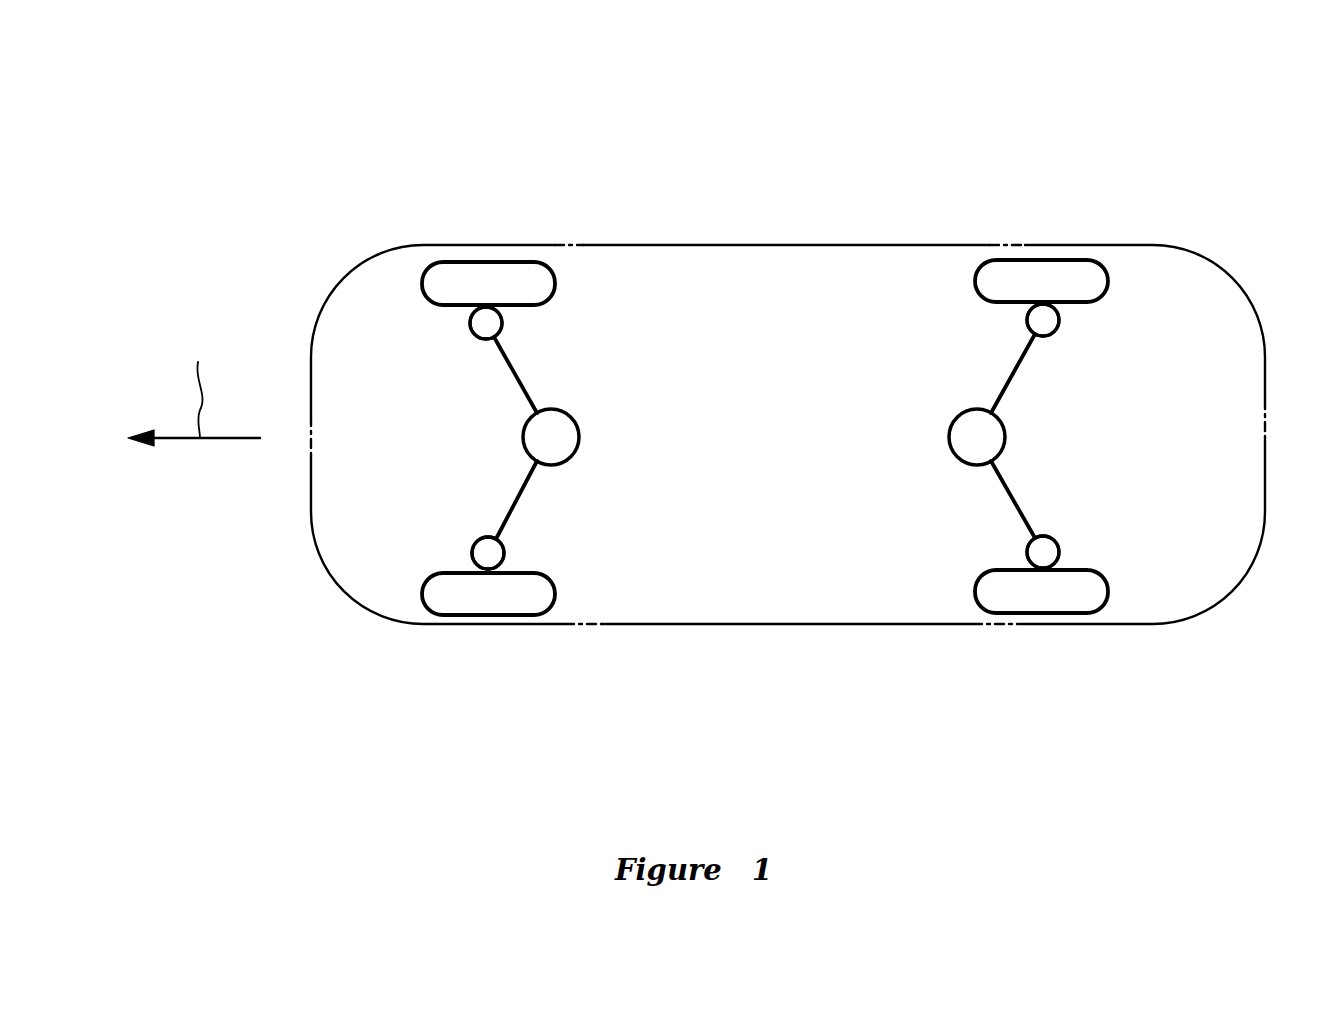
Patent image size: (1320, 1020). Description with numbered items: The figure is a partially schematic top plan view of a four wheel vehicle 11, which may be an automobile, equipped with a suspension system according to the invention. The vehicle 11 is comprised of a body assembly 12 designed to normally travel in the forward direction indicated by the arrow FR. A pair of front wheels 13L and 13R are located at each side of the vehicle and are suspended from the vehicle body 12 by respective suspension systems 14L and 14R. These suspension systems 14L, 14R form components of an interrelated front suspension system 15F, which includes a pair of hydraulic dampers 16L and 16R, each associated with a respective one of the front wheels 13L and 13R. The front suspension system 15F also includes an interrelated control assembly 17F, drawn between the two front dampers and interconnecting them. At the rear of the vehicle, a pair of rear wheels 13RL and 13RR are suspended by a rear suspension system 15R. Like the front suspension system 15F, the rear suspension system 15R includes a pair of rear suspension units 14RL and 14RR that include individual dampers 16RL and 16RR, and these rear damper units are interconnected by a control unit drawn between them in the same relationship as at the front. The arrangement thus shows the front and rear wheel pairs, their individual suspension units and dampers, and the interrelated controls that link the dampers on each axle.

The vehicle 11 is at (1224, 111).
The body assembly 12 is at (785, 246).
The front wheel 13R is at (507, 284).
The front wheel 13L is at (512, 598).
The rear wheel 13RR is at (1046, 282).
The rear wheel 13RL is at (1057, 598).
The suspension system 14R is at (457, 345).
The suspension system 14L is at (460, 535).
The rear suspension unit 14RR is at (1079, 330).
The rear suspension unit 14RL is at (1075, 534).
The front suspension system 15F is at (625, 387).
The rear suspension system 15R is at (894, 501).
The hydraulic damper 16R is at (502, 323).
The hydraulic damper 16L is at (505, 552).
The damper 16RR is at (1027, 320).
The damper 16RL is at (1027, 550).
The control assembly 17F is at (568, 435).